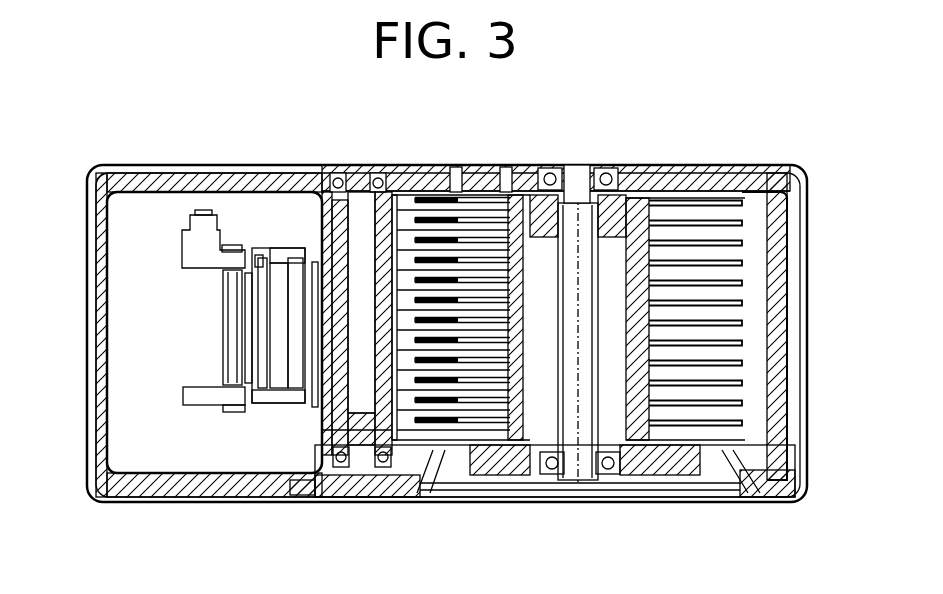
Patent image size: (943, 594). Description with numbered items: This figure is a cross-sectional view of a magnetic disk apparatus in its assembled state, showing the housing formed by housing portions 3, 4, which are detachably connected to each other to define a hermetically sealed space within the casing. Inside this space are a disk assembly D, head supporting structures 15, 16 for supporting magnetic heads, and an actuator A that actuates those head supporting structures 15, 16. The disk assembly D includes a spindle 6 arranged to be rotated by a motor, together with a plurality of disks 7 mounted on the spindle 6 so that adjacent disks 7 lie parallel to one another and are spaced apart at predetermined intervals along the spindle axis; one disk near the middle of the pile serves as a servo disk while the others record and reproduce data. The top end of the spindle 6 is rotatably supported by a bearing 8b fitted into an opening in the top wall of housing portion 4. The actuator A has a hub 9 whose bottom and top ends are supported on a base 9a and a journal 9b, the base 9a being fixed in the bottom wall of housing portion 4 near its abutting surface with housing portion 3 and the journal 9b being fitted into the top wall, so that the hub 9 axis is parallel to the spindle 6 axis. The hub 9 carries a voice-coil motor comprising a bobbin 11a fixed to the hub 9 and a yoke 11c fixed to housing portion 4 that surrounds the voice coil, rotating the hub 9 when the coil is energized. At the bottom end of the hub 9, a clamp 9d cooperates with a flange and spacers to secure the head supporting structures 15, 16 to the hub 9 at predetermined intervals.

The housing portion 3 is at (87, 192).
The housing portion 4 is at (807, 243).
The actuator A is at (211, 248).
The yoke 11c is at (205, 212).
The bobbin 11a is at (290, 248).
The hub 9 is at (365, 465).
The base 9a is at (300, 465).
The journal 9b is at (360, 165).
The clamp 9d is at (325, 433).
The head supporting structure 15 is at (473, 340).
The head supporting structure 16 is at (478, 195).
The bearing 8b is at (586, 165).
The disk assembly D is at (745, 261).
The disks 7 is at (717, 363).
The spindle 6 is at (578, 470).